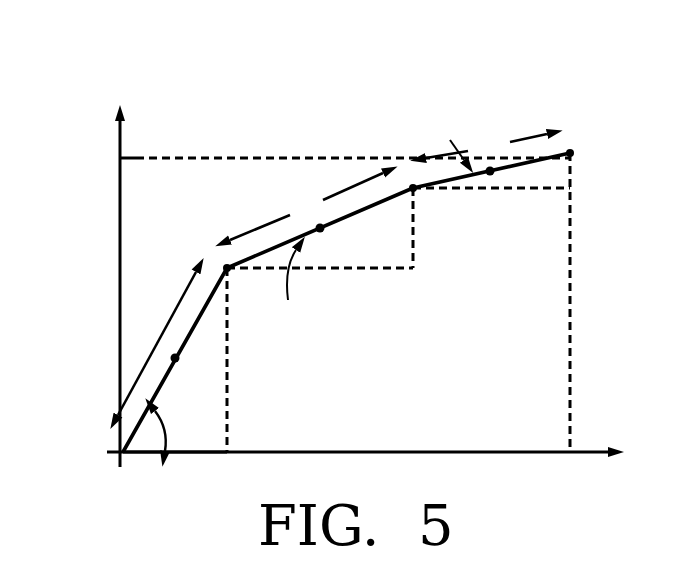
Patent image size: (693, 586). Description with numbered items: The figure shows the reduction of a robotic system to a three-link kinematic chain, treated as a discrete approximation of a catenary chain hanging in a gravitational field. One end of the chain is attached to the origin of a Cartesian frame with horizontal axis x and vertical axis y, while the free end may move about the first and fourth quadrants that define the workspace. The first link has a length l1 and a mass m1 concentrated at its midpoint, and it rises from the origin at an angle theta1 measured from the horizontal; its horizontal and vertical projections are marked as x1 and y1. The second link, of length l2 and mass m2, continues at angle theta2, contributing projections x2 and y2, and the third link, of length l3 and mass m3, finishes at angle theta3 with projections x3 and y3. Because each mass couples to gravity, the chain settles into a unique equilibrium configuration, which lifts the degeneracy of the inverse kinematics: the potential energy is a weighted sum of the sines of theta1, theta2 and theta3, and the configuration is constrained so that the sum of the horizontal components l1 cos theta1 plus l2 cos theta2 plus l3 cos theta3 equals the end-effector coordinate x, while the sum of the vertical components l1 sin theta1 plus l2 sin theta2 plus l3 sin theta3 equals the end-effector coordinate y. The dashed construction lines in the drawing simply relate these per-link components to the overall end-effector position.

The x-coordinate of end-effector position x is at (373, 450).
The y-coordinate of end-effector position y is at (118, 272).
The x-component of first link x1 is at (175, 470).
The y-component of first link y1 is at (246, 360).
The x-component of second link x2 is at (320, 286).
The y-component of second link y2 is at (431, 228).
The x-component of third link x3 is at (470, 203).
The y-component of third link y3 is at (587, 302).
The length of first link l1 is at (157, 343).
The length of second link l2 is at (306, 206).
The length of third link l3 is at (486, 145).
The mass of first link m1 is at (189, 377).
The mass of second link m2 is at (339, 242).
The mass of third link m3 is at (502, 178).
The angle of first link theta1 is at (179, 430).
The angle of second link theta2 is at (281, 291).
The angle of third link theta3 is at (438, 136).